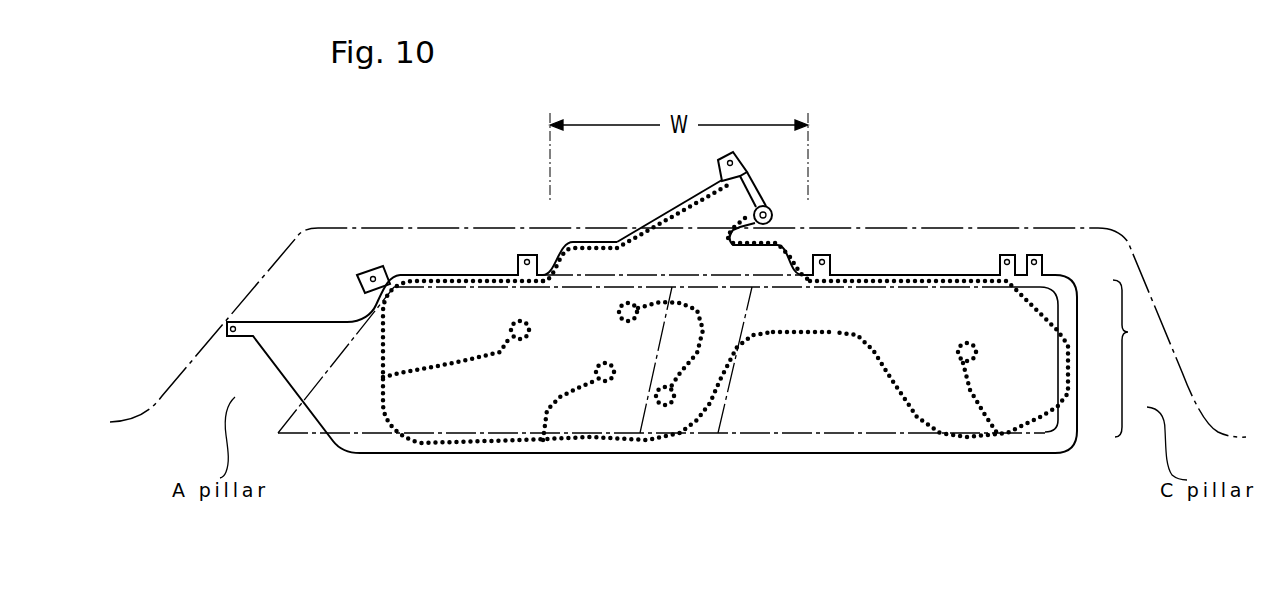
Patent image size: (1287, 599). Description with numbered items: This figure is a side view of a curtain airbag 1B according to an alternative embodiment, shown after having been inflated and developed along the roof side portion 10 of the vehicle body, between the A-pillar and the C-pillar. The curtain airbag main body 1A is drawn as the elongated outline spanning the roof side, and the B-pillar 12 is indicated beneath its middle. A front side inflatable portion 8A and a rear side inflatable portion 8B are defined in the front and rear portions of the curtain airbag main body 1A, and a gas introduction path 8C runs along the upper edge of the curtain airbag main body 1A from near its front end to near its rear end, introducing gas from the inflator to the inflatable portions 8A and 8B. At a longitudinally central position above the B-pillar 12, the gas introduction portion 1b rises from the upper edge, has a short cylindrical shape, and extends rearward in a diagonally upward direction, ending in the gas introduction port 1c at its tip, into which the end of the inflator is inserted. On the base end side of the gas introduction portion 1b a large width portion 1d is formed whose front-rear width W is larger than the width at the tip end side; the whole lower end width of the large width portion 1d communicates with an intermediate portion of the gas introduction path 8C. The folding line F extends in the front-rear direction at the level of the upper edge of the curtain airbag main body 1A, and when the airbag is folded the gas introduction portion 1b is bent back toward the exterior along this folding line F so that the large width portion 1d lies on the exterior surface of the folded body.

The roof side portion 10 is at (875, 243).
The curtain airbag 1B is at (450, 254).
The curtain airbag main body 1A is at (1086, 358).
The gas introduction portion 1b is at (696, 201).
The gas introduction port 1c is at (750, 189).
The large width portion 1d is at (602, 253).
The folding line F is at (598, 275).
The front side inflatable portion 8A is at (380, 417).
The rear side inflatable portion 8B is at (898, 413).
The gas introduction path 8C is at (807, 313).
The B-pillar 12 is at (650, 382).